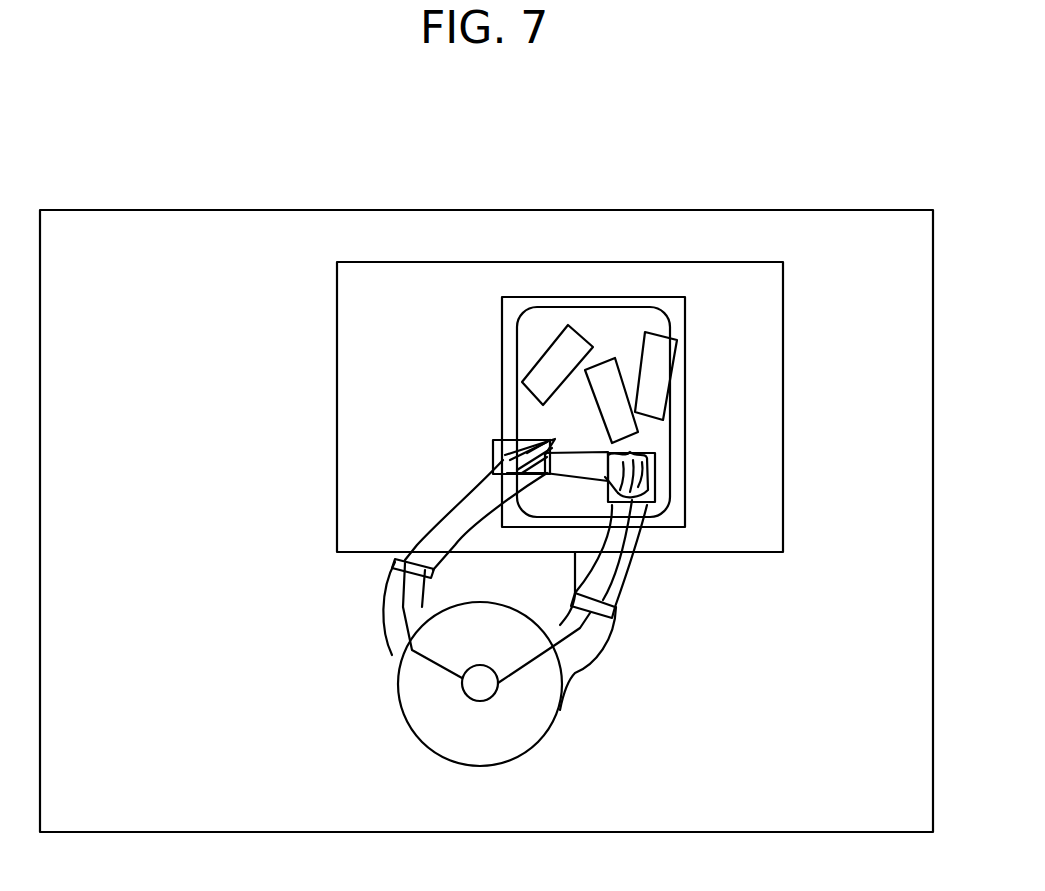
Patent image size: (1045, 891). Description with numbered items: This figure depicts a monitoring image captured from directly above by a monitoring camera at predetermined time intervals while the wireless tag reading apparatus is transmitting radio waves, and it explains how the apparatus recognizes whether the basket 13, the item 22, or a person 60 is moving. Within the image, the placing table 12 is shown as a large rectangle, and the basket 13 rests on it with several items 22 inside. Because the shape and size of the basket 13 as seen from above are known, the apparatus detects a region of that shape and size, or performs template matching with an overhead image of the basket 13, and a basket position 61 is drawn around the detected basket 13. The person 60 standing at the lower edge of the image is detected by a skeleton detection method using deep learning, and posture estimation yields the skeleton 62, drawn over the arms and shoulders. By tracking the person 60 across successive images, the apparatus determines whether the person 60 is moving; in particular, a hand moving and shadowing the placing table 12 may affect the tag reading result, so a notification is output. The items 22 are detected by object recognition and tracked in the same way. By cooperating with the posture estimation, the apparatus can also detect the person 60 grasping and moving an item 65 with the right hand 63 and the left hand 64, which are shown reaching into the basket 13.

The placing table 12 is at (783, 473).
The basket 13 is at (677, 428).
The item 22 is at (573, 347).
The basket position 61 is at (642, 302).
The person 60 is at (568, 462).
The skeleton 62 is at (615, 615).
The right hand 63 is at (660, 490).
The left hand 64 is at (415, 313).
The item 65 is at (552, 440).